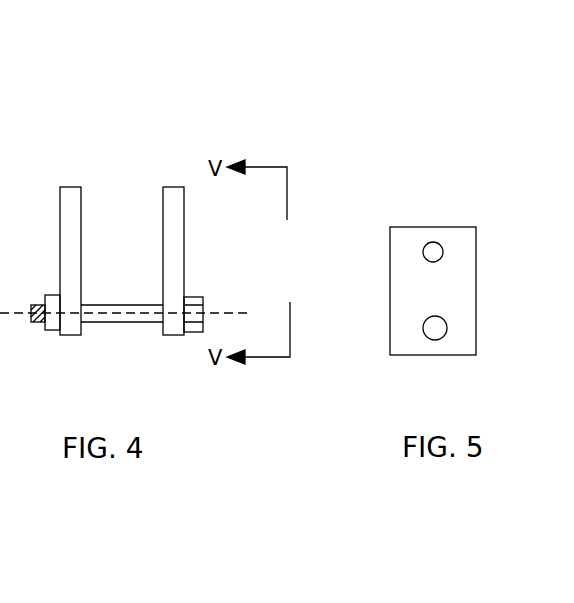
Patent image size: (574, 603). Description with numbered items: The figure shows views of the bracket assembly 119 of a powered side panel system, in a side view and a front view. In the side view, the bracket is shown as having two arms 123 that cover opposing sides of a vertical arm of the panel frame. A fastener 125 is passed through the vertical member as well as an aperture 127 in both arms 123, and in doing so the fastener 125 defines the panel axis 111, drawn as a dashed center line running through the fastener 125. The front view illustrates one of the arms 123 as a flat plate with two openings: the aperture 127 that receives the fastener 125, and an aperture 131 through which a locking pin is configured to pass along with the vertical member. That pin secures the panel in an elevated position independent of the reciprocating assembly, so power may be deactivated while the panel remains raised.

In FIG. 4, the bracket assembly 119 is at (117, 217).
In FIG. 4, the arms 123 is at (163, 255).
In FIG. 5, the arms 123 is at (390, 255).
In FIG. 4, the fastener 125 is at (118, 322).
In FIG. 4, the panel axis 111 is at (218, 311).
In FIG. 5, the apertures 131 is at (442, 240).
In FIG. 5, the aperture 127 is at (447, 326).